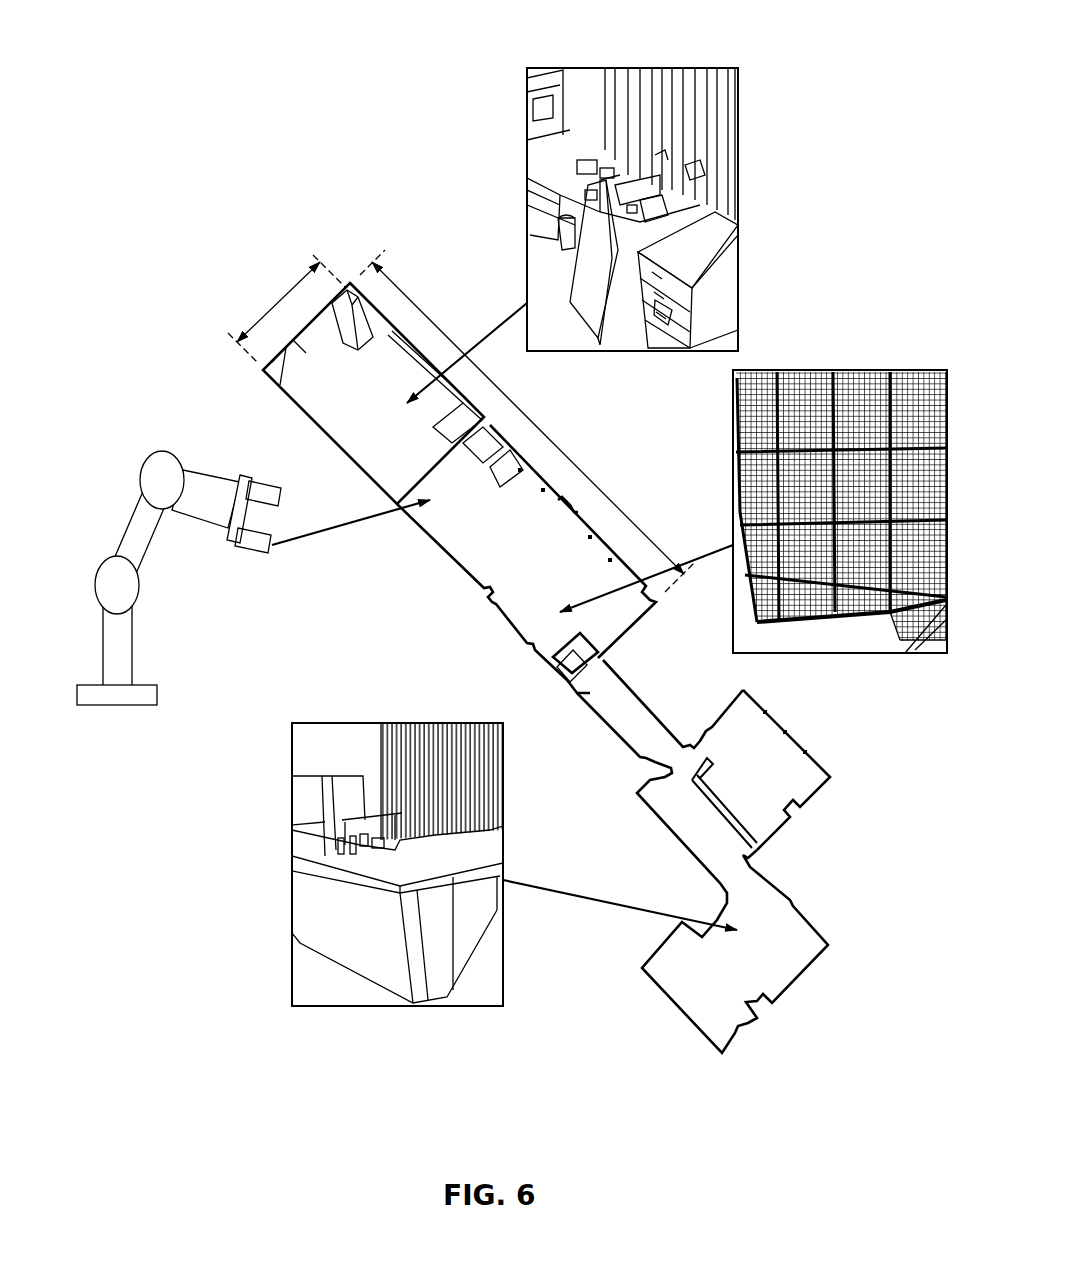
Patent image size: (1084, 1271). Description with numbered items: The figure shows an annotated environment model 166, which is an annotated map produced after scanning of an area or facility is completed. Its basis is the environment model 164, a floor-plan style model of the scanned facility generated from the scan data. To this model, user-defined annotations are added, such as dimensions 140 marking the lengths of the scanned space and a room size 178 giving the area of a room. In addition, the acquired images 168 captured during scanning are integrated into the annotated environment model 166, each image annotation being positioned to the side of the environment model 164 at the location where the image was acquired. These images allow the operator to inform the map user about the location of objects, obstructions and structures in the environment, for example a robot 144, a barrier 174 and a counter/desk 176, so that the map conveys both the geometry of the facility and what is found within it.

The annotated environment model 166 is at (137, 62).
The dimensions 140 is at (248, 276).
The room size 178 is at (333, 387).
The environment model 164 is at (782, 827).
The robot 144 is at (160, 452).
The acquired images 168 is at (527, 162).
The barrier 174 is at (852, 371).
The counter/desk 176 is at (292, 830).